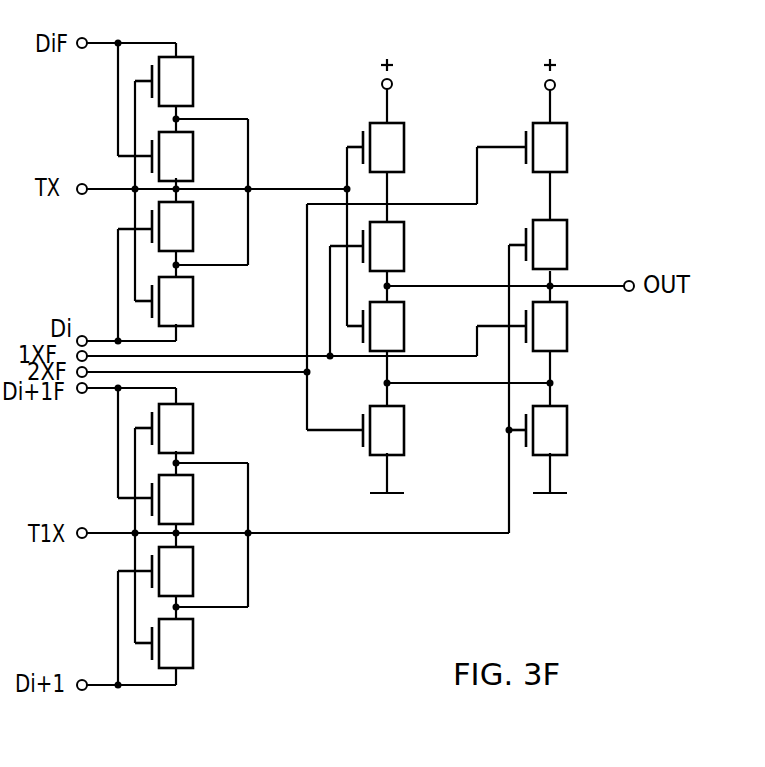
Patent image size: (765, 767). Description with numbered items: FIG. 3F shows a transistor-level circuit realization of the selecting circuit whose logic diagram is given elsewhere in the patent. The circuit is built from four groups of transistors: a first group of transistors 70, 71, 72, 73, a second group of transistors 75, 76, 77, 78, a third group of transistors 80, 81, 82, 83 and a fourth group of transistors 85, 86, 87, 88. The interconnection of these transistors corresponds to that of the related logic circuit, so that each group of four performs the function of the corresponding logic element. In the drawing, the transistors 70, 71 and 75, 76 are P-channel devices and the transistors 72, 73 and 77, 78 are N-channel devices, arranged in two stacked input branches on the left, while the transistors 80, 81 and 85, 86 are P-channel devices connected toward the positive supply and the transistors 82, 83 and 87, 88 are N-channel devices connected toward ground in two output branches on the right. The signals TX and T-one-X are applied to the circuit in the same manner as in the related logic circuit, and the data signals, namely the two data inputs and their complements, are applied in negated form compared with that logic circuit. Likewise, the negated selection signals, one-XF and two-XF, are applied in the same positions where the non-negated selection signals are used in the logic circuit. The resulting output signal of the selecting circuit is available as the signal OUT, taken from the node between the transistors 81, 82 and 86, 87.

The transistor 70 is at (193, 80).
The transistor 71 is at (193, 170).
The transistor 72 is at (193, 240).
The transistor 73 is at (193, 317).
The transistor 75 is at (193, 431).
The transistor 76 is at (193, 515).
The transistor 77 is at (193, 576).
The transistor 78 is at (193, 663).
The transistor 80 is at (404, 148).
The transistor 81 is at (400, 255).
The transistor 82 is at (403, 337).
The transistor 83 is at (404, 441).
The transistor 85 is at (567, 157).
The transistor 86 is at (567, 260).
The transistor 87 is at (567, 333).
The transistor 88 is at (567, 442).